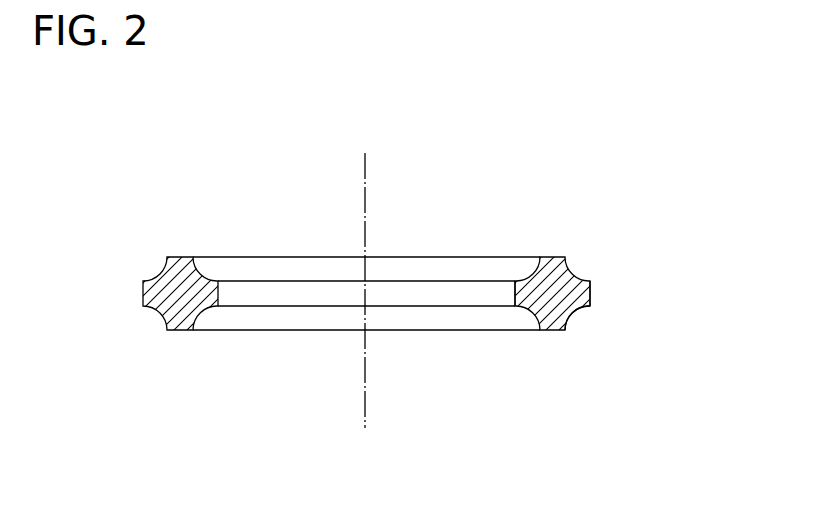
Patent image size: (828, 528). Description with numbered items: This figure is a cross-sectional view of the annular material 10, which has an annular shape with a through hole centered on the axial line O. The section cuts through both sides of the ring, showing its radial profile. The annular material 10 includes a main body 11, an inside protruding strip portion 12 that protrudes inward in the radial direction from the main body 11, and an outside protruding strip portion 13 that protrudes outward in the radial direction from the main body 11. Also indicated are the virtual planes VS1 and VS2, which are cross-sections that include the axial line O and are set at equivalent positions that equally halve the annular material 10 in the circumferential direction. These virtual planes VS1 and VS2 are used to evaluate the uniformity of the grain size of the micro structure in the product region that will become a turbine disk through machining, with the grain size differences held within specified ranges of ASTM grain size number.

The annular material 10 is at (414, 264).
The main body 11 is at (548, 330).
The inside protruding strip portion 12 is at (516, 291).
The outside protruding strip portion 13 is at (590, 291).
The virtual plane VS1 is at (160, 312).
The virtual plane VS2 is at (567, 302).
The axial line O is at (365, 165).